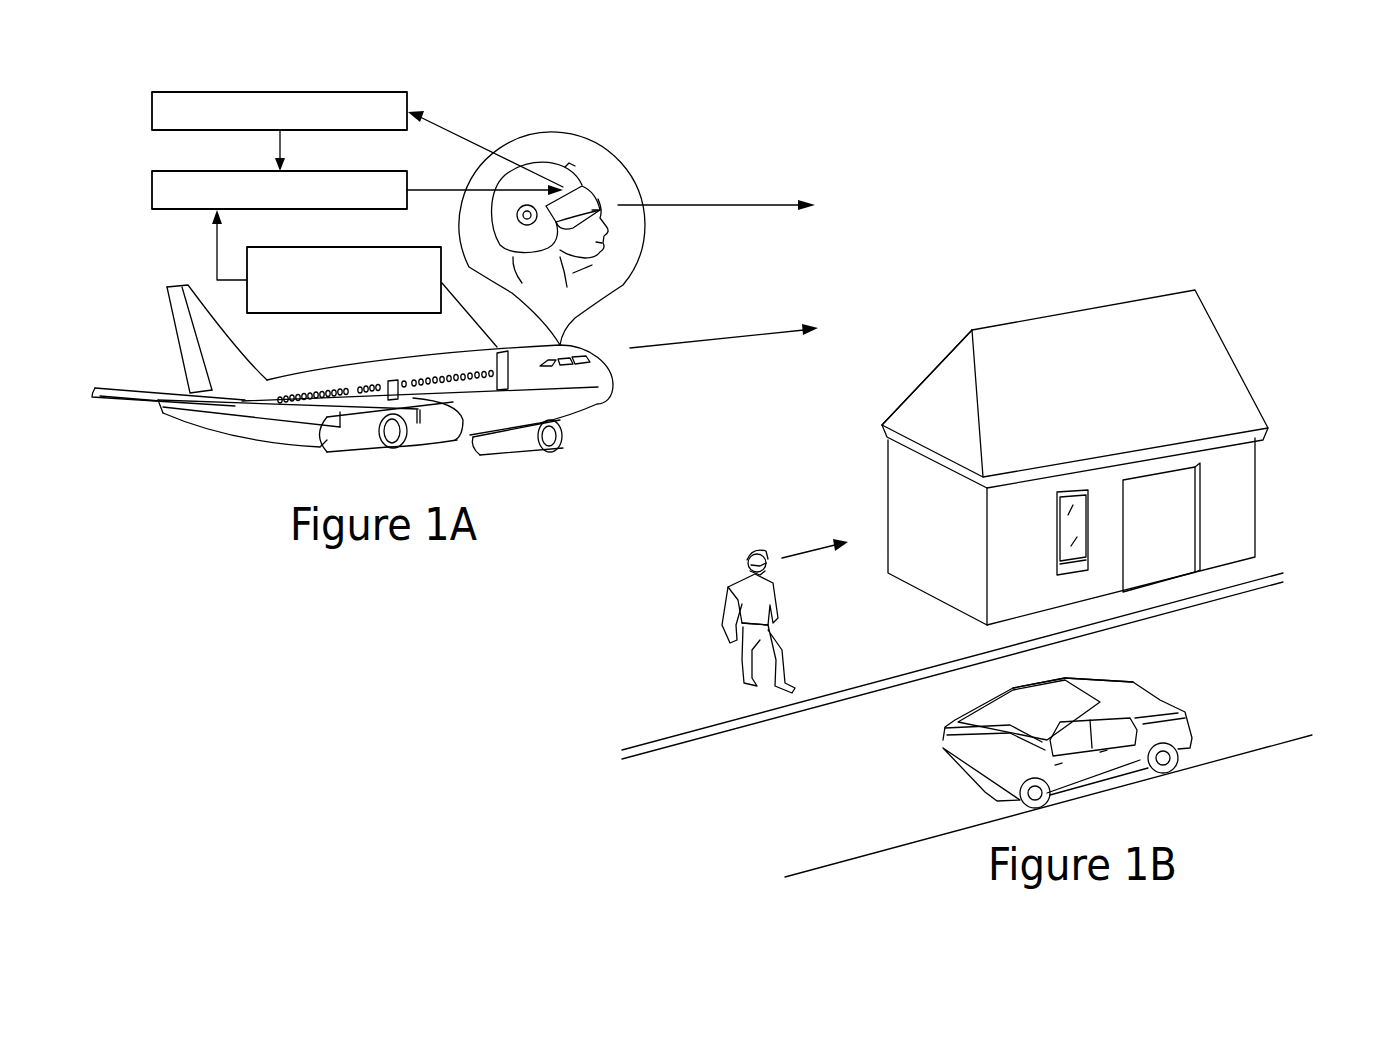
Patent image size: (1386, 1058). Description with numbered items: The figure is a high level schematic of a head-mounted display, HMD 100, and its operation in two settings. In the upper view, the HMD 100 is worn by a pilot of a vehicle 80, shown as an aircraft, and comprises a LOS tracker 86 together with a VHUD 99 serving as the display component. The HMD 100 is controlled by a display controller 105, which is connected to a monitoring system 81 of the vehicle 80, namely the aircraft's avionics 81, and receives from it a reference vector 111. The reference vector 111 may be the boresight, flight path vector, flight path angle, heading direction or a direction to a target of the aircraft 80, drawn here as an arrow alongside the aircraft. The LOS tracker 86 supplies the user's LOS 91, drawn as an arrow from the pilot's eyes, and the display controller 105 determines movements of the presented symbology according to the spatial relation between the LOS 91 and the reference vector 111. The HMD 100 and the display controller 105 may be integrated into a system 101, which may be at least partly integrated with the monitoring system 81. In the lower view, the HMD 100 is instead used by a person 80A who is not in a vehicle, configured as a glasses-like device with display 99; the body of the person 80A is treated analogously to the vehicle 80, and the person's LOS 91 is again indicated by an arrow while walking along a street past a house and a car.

In FIG. 1A, the system 101 is at (114, 136).
In FIG. 1A, the LOS tracker 86 is at (204, 90).
In FIG. 1A, the display controller 105 is at (222, 169).
In FIG. 1A, the monitoring system 81 is at (300, 245).
In FIG. 1A, the HMD 100 is at (656, 136).
In FIG. 1B, the HMD 100 is at (740, 542).
In FIG. 1A, the VHUD 99 is at (605, 190).
In FIG. 1B, the VHUD 99 is at (782, 558).
In FIG. 1A, the user's LOS 91 is at (704, 196).
In FIG. 1B, the user's LOS 91 is at (810, 542).
In FIG. 1A, the reference vector 111 is at (697, 343).
In FIG. 1A, the vehicle 80 is at (575, 406).
In FIG. 1B, the person 80A is at (725, 603).